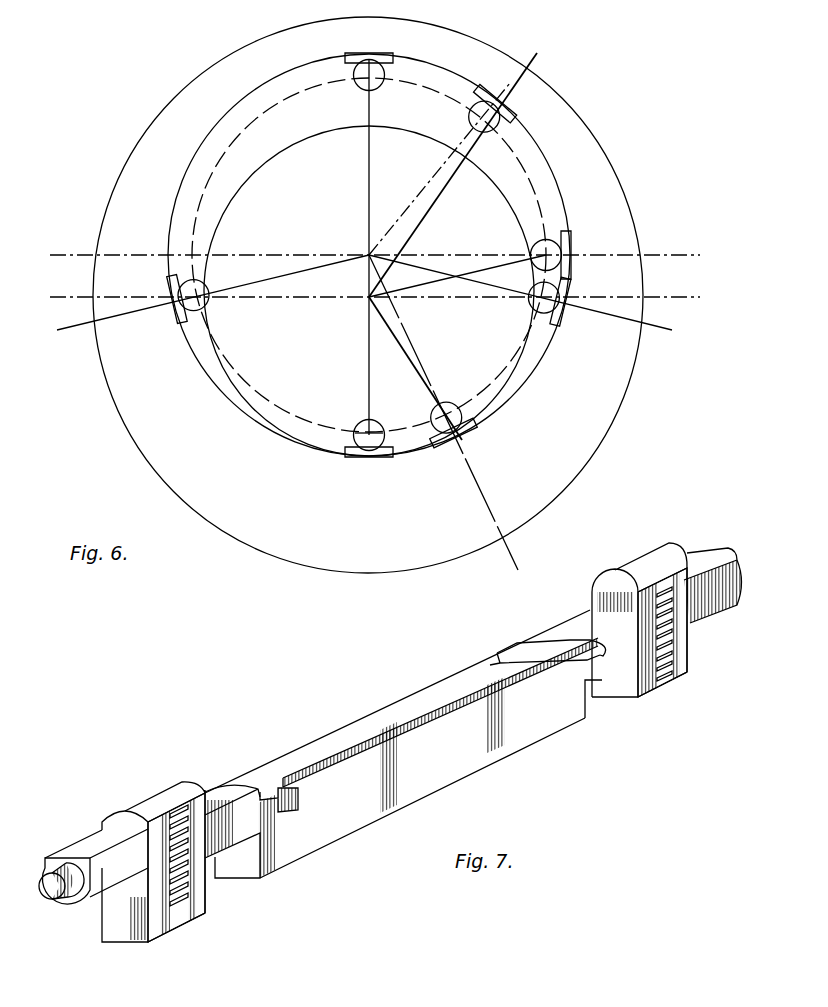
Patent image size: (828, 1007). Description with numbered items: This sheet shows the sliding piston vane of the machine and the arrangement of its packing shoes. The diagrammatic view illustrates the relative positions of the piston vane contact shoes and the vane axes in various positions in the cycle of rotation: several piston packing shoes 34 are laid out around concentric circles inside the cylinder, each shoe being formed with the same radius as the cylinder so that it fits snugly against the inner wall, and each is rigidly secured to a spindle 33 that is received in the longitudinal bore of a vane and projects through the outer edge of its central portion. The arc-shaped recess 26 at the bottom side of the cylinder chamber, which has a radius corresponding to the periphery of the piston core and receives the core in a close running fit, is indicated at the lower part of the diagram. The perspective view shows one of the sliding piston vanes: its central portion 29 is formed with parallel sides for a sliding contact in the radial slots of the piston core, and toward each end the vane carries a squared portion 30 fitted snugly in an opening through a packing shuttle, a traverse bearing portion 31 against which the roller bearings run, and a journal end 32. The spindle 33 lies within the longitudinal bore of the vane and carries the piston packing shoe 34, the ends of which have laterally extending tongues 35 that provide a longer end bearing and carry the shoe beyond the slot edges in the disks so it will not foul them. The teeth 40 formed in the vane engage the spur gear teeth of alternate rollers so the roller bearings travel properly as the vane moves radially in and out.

In FIG. 6, the arc-shaped recess 26 is at (353, 463).
In FIG. 7, the central portion 29 is at (371, 805).
In FIG. 7, the squared portion 30 is at (218, 798).
In FIG. 7, the traverse bearing portion 31 is at (200, 897).
In FIG. 7, the journal end 32 is at (90, 842).
In FIG. 6, the spindle 33 is at (205, 306).
In FIG. 7, the spindle 33 is at (55, 886).
In FIG. 6, the piston packing shoe 34 is at (510, 112).
In FIG. 7, the piston packing shoe 34 is at (308, 763).
In FIG. 7, the laterally extending tongue 35 is at (278, 797).
In FIG. 7, the spur gear teeth 40 is at (178, 920).